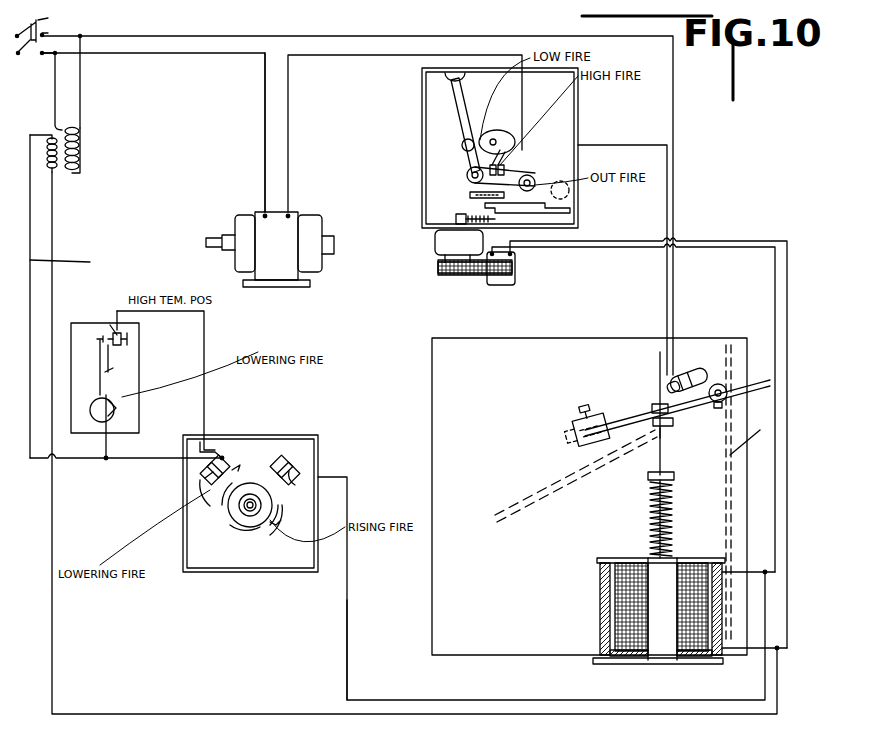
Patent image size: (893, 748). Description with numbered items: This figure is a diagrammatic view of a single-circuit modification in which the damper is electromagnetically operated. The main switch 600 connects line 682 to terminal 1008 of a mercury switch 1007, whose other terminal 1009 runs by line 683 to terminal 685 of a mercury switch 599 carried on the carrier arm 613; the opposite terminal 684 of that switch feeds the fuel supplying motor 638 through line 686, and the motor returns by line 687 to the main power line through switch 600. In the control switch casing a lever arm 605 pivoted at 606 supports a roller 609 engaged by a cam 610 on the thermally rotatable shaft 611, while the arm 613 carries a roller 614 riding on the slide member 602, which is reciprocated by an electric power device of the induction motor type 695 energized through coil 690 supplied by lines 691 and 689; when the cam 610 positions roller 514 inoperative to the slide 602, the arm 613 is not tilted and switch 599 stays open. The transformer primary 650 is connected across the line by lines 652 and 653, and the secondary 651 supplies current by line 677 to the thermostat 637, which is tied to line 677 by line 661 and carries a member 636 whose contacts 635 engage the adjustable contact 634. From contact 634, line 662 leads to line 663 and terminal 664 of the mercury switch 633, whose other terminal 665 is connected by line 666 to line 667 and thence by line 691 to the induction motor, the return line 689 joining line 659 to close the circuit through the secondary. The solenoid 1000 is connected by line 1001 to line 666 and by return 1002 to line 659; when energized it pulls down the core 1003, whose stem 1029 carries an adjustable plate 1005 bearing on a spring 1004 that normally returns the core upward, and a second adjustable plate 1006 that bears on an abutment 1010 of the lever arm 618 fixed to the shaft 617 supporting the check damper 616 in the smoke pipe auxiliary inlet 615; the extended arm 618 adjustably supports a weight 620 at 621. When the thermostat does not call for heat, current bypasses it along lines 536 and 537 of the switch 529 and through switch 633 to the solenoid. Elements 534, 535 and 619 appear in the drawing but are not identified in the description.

The main switch 600 is at (35, 53).
The line 682 is at (676, 178).
The line 652 is at (82, 104).
The line 653 is at (60, 98).
The primary 650 is at (82, 152).
The secondary 651 is at (60, 175).
The return line 659 is at (54, 235).
The line 677 is at (78, 258).
The line 687 is at (263, 152).
The line 686 is at (345, 57).
The motor 638 is at (290, 222).
The line 662 is at (208, 338).
The thermostat 637 is at (118, 410).
The contacts 635 is at (104, 320).
The adjustable contact 634 is at (130, 339).
The member 636 is at (102, 376).
The line 661 is at (110, 450).
The line 537 is at (122, 468).
The roller 614 is at (300, 435).
The thermally rotatable shaft 611 is at (250, 506).
The lowering fire contact 535 is at (230, 460).
The line 536 is at (208, 445).
The line 663 is at (280, 455).
The terminal 664 is at (300, 472).
The line 666 is at (318, 470).
The terminal 665 is at (288, 520).
The cam follower 534 is at (200, 480).
The switch 529 is at (228, 510).
The mercury switch 633 is at (249, 459).
The line 667 is at (350, 612).
The line 683 is at (604, 145).
The pivot 606 is at (452, 78).
The lever arm 605 is at (466, 105).
The roller 609 is at (468, 150).
The carrier member 613 is at (478, 185).
The terminal 684 is at (470, 180).
The cam 610 is at (505, 142).
The terminal 685 is at (505, 160).
The mercury switch 599 is at (510, 172).
The roller 514 is at (567, 184).
The member 602 is at (570, 212).
The induction motor 695 is at (440, 240).
The coil 690 is at (500, 280).
The line 691 is at (542, 249).
The return line 689 is at (598, 243).
The smoke pipe auxiliary inlet 615 is at (430, 372).
The adjustable plate 1006 is at (610, 440).
The weight 620 is at (572, 424).
The adjustable support 621 is at (586, 408).
The lever arm 618 is at (630, 408).
The pivot 619 is at (665, 418).
The abutment 1010 is at (656, 405).
The terminal 1008 is at (690, 372).
The terminal 1009 is at (675, 372).
The mercury switch 1007 is at (722, 384).
The shaft 617 is at (735, 385).
The check damper 616 is at (760, 430).
The stem 1029 is at (605, 478).
The adjustable plate 1005 is at (672, 480).
The spring 1004 is at (648, 530).
The solenoid 1000 is at (614, 588).
The core 1003 is at (662, 630).
The return 1002 is at (750, 662).
The line 1001 is at (770, 565).